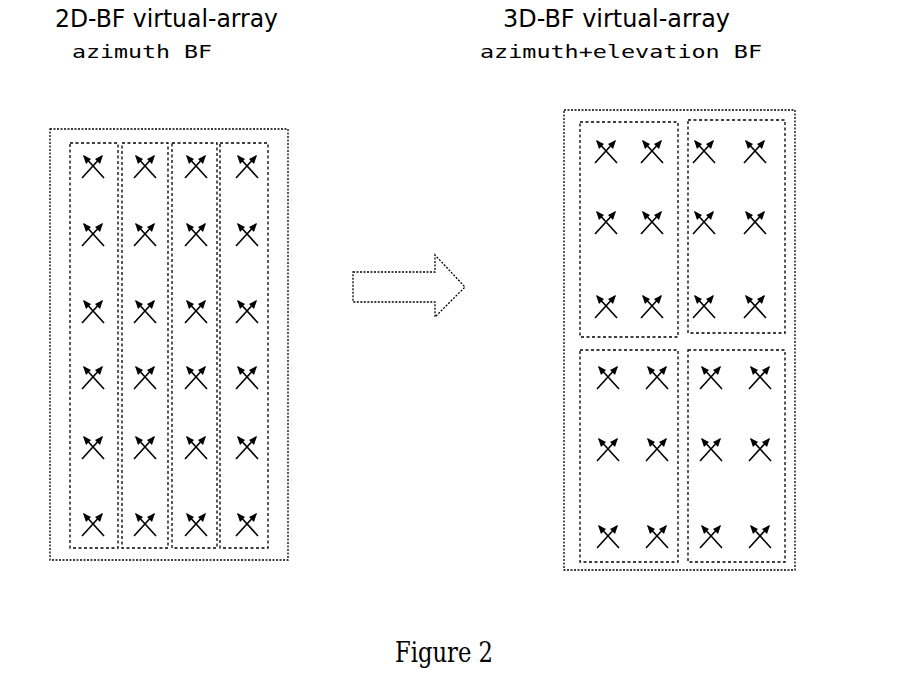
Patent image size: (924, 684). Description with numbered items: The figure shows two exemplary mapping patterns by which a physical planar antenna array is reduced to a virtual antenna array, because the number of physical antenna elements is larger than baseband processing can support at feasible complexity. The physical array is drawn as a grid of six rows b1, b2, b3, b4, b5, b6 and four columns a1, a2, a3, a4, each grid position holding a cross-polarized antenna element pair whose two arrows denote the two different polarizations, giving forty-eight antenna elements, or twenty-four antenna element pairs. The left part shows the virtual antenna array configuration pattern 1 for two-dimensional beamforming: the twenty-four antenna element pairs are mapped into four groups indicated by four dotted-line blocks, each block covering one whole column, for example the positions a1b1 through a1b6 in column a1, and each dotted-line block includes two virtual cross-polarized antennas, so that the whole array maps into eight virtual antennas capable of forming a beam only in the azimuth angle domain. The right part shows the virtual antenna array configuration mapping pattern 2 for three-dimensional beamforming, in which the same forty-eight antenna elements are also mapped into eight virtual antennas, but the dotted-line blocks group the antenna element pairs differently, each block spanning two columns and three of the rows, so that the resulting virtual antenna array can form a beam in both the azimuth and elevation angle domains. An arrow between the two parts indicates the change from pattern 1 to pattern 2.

The virtual antenna array configuration pattern 1 is at (182, 342).
The virtual antenna array configuration mapping pattern 2 is at (641, 358).
The column a1 is at (348, 312).
The column a2 is at (395, 312).
The column a3 is at (451, 312).
The column a4 is at (503, 312).
The row b1 is at (287, 161).
The row b2 is at (287, 230).
The row b3 is at (287, 311).
The row b4 is at (287, 379).
The row b5 is at (287, 449).
The row b6 is at (287, 531).